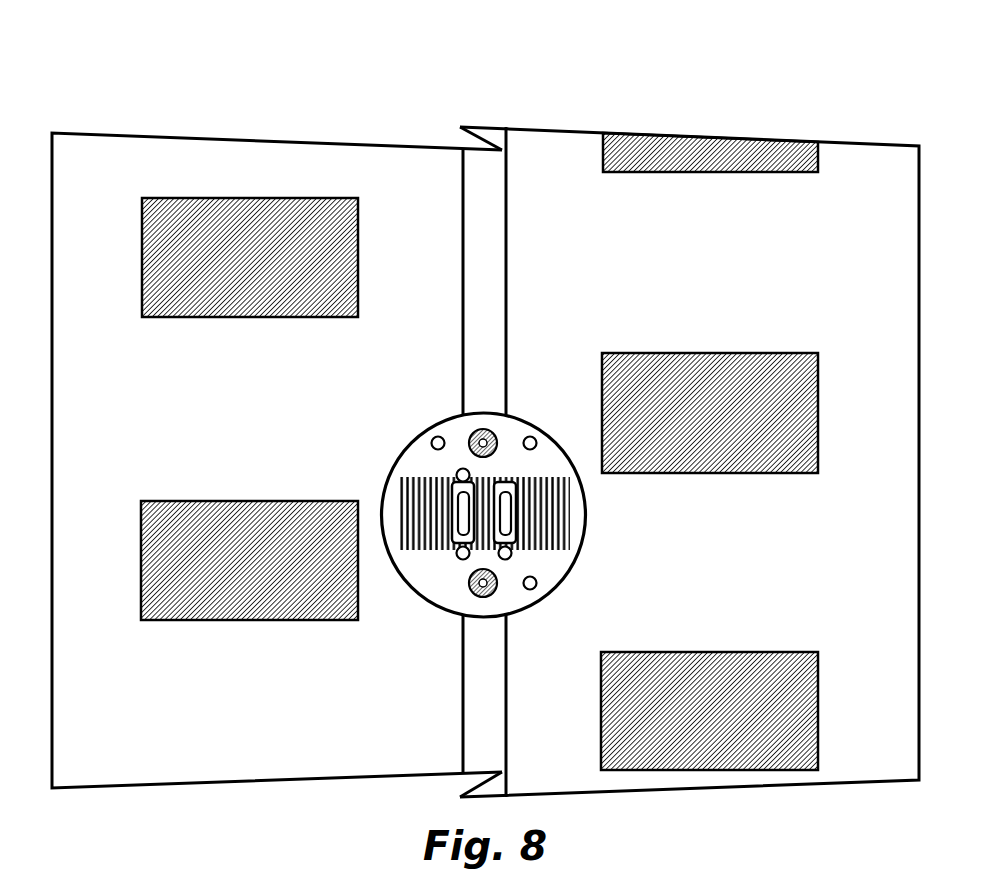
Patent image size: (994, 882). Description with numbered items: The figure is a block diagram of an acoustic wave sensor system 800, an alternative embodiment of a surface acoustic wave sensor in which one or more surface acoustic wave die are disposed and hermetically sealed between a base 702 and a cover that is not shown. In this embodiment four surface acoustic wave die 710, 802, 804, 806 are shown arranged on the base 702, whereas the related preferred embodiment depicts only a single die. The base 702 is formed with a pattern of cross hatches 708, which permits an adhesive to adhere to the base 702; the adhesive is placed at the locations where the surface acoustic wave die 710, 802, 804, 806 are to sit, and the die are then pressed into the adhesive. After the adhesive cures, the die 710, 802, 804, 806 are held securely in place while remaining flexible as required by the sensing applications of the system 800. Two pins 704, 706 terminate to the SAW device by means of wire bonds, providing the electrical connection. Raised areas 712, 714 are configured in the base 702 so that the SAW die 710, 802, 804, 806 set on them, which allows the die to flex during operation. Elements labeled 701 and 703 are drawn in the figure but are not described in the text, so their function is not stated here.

The acoustic wave sensor system 800 is at (485, 405).
The first solar panel 701 is at (270, 373).
The second solar panel 703 is at (725, 266).
The base 702 is at (586, 510).
The pin 704 is at (470, 436).
The pin 706 is at (472, 590).
The pattern of cross hatches 708 is at (413, 505).
The surface acoustic wave die 710 is at (456, 472).
The raised area 712 is at (460, 533).
The raised area 714 is at (507, 525).
The surface acoustic wave die 802 is at (530, 436).
The surface acoustic wave die 804 is at (507, 558).
The surface acoustic wave die 806 is at (457, 555).